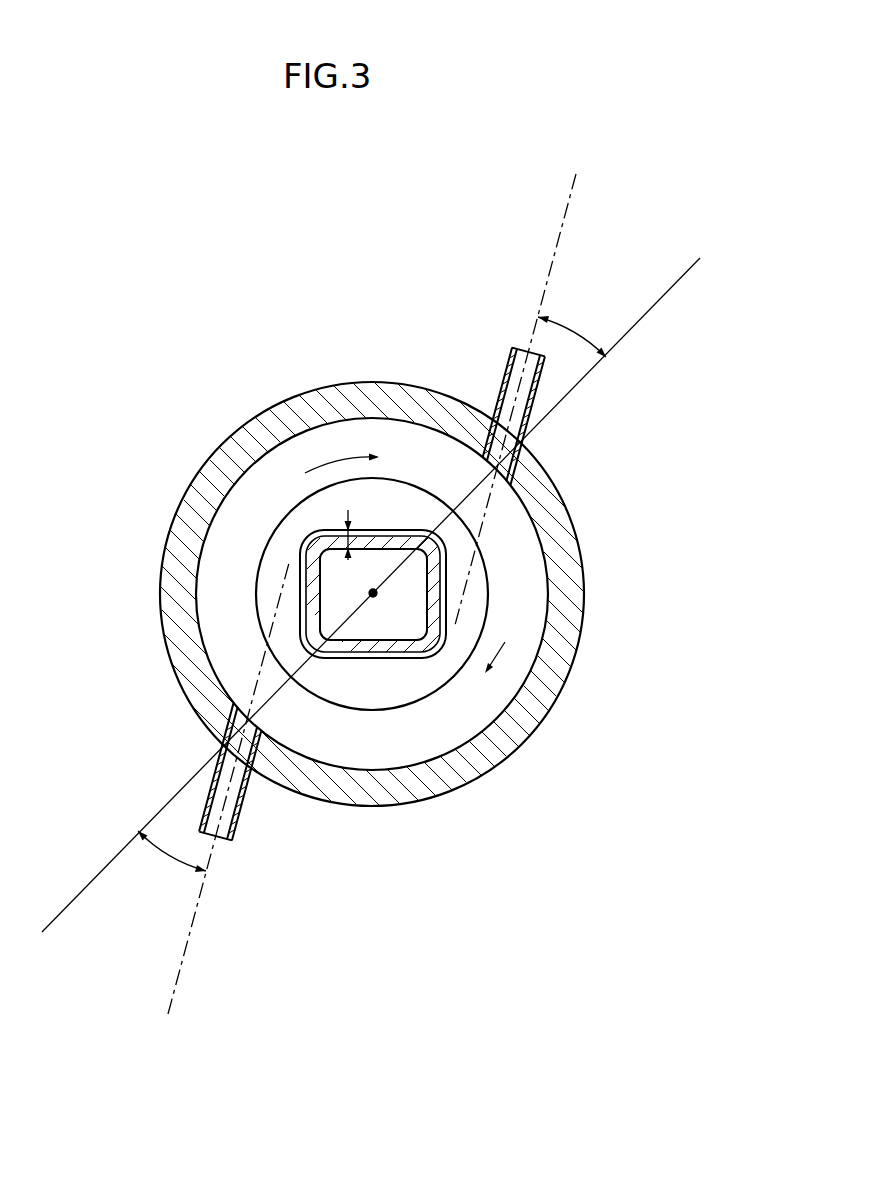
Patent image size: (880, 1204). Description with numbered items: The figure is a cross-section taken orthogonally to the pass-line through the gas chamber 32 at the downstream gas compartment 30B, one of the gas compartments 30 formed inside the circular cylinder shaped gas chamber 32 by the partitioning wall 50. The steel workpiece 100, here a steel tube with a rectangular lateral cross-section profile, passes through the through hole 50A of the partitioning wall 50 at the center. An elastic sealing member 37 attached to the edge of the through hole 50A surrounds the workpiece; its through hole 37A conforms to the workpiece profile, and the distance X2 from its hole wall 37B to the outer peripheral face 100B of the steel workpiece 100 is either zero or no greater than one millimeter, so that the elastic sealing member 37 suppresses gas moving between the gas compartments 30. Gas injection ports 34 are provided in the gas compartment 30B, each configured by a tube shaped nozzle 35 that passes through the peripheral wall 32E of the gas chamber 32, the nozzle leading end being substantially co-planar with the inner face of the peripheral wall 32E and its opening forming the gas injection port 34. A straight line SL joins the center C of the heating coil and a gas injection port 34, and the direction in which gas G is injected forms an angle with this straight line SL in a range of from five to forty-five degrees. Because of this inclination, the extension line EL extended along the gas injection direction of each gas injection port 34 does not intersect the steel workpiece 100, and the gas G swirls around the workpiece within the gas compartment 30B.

The gas chamber 32 is at (324, 380).
The peripheral wall 32E is at (377, 383).
The gas compartments 30 is at (421, 594).
The gas compartment 30B is at (476, 718).
The partitioning wall 50 is at (295, 552).
The through hole 50A is at (307, 498).
The nozzle 35 is at (510, 366).
The gas injection port 34 is at (484, 460).
The elastic sealing member 37 is at (432, 608).
The through hole 37A is at (507, 594).
The hole wall 37B is at (441, 584).
The steel workpiece 100 is at (399, 654).
The outer peripheral face 100B is at (363, 659).
The distance X2 is at (346, 542).
The center of the heating coil C is at (370, 593).
The gas G is at (350, 462).
The extension line EL is at (561, 238).
The straight line SL is at (661, 298).